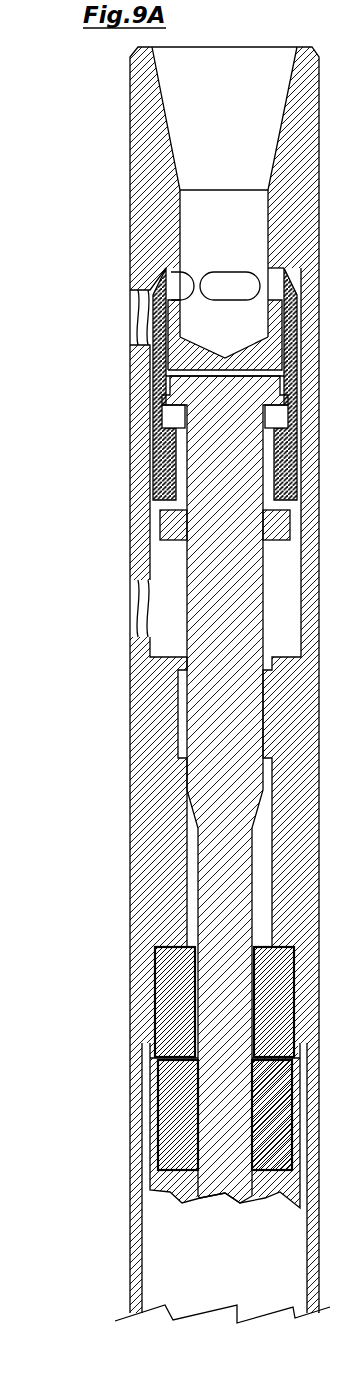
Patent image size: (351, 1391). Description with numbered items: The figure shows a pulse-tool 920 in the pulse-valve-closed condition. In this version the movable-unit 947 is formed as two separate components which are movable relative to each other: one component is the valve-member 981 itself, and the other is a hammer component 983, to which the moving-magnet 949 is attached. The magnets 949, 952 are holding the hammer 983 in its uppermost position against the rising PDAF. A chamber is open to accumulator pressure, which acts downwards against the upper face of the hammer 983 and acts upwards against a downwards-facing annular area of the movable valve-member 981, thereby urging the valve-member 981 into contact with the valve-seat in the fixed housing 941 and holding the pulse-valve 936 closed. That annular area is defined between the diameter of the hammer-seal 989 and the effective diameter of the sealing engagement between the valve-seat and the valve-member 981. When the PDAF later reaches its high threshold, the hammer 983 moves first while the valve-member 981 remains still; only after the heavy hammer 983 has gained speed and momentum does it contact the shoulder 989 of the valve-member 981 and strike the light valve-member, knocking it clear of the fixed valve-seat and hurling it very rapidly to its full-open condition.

The tool 920 is at (118, 1228).
The pulse-valve 936 is at (110, 296).
The fixed housing 941 is at (155, 820).
The movable-unit 947 is at (208, 559).
The moving-magnet 949 is at (178, 1140).
The magnet 952 is at (172, 981).
The valve-member 981 is at (163, 453).
The hammer component 983 is at (227, 621).
The hammer-seal 989 is at (163, 410).